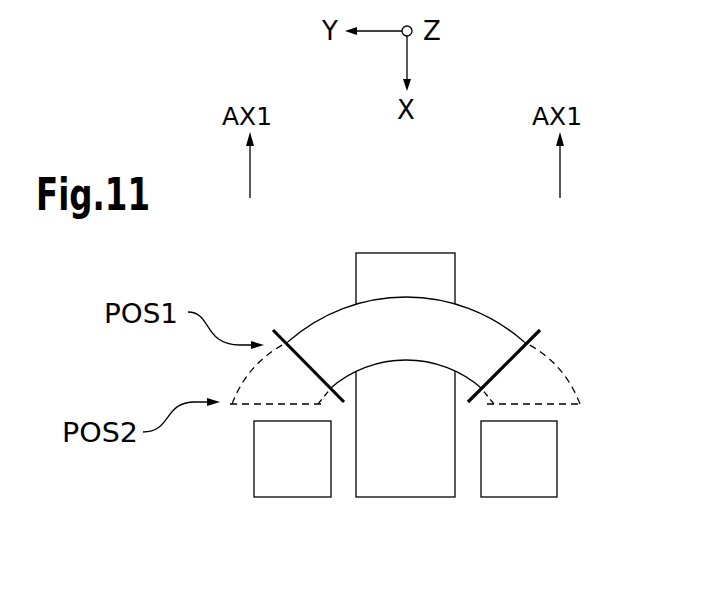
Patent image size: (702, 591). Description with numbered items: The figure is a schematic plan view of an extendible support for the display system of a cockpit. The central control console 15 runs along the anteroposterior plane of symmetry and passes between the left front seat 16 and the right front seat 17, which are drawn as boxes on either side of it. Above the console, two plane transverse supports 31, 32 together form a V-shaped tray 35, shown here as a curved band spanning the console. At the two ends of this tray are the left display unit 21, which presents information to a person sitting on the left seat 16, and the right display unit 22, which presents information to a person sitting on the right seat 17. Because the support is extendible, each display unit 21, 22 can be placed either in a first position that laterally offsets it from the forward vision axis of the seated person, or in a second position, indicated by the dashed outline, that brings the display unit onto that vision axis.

The central control console 15 is at (440, 264).
The left front seat 16 is at (292, 459).
The right front seat 17 is at (519, 459).
The left display unit 21 is at (286, 338).
The right display unit 22 is at (528, 337).
The transverse support 31 is at (337, 336).
The transverse support 32 is at (465, 336).
The V-shaped tray 35 is at (380, 311).